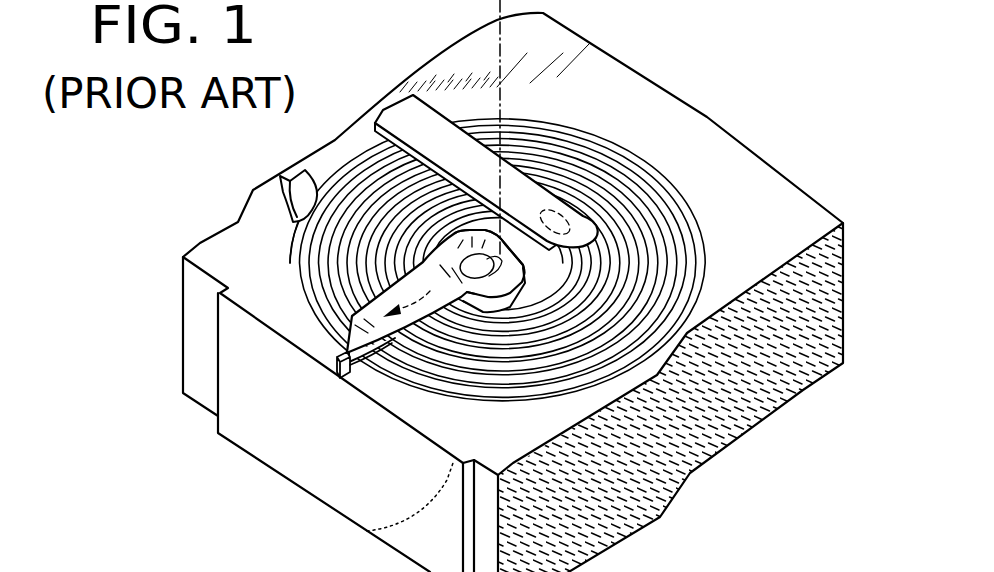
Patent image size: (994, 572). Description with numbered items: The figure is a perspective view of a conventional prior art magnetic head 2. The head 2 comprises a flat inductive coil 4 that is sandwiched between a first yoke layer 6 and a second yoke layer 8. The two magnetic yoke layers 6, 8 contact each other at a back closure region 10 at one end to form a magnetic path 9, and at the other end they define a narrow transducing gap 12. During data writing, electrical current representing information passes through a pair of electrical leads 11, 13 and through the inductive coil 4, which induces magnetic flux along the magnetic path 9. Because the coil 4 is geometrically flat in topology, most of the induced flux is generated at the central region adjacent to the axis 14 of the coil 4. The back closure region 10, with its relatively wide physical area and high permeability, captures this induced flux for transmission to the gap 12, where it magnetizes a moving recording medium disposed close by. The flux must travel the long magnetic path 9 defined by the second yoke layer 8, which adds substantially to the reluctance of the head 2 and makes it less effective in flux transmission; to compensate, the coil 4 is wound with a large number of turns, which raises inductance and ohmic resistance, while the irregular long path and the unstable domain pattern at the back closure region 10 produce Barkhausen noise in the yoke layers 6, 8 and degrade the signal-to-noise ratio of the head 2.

The magnetic head 2 is at (753, 97).
The inductive coil 4 is at (596, 125).
The first yoke layer 6 is at (367, 372).
The second yoke layer 8 is at (340, 338).
The magnetic path 9 is at (414, 296).
The back closure region 10 is at (519, 264).
The electrical lead 11 is at (287, 173).
The transducing gap 12 is at (333, 373).
The electrical lead 13 is at (400, 113).
The axis 14 is at (496, 42).